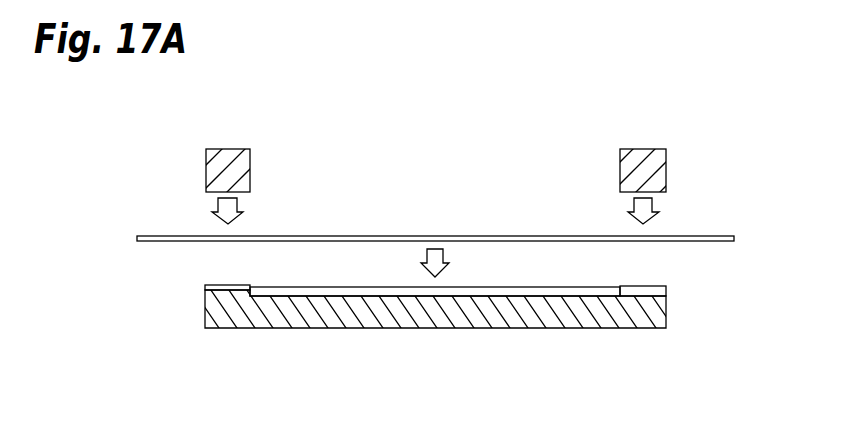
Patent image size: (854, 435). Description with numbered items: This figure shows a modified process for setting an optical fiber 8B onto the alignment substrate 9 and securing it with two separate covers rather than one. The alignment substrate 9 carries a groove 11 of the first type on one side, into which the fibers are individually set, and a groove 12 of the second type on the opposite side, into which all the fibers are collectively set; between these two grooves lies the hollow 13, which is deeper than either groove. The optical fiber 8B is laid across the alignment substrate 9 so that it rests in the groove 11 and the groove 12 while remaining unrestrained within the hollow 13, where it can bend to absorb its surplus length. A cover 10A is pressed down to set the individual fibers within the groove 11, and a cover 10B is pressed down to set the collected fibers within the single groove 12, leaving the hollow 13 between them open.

The optical fiber 8B is at (169, 235).
The cover 10B is at (225, 160).
The cover 10A is at (638, 158).
The alignment substrate 9 is at (432, 328).
The groove 11 is at (230, 285).
The groove 12 is at (640, 290).
The hollow 13 is at (302, 292).